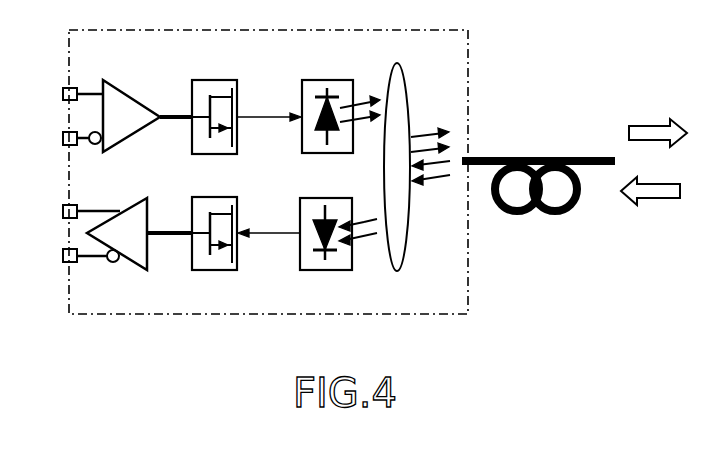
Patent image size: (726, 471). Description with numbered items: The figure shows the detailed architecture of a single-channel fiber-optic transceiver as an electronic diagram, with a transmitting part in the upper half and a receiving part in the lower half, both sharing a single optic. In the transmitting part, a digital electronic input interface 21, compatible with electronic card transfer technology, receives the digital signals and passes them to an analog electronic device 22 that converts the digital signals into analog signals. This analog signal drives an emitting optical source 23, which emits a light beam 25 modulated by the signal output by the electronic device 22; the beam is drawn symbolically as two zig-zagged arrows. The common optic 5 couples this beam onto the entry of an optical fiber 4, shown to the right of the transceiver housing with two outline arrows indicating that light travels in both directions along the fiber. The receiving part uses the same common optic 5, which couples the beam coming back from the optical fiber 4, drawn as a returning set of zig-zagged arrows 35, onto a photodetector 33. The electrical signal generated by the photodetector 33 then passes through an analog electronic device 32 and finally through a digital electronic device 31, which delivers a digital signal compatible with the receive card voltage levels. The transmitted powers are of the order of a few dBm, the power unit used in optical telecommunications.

The digital electronic input interface 21 is at (127, 99).
The analog electronic device 22 is at (203, 92).
The emitting optical source 23 is at (310, 95).
The common optic 5 is at (400, 118).
The light beam 25 is at (428, 126).
The received light beam 35 is at (440, 190).
The optical fiber 4 is at (560, 217).
The digital electronic device 31 is at (140, 255).
The analog electronic device 32 is at (198, 263).
The photodetector 33 is at (310, 262).